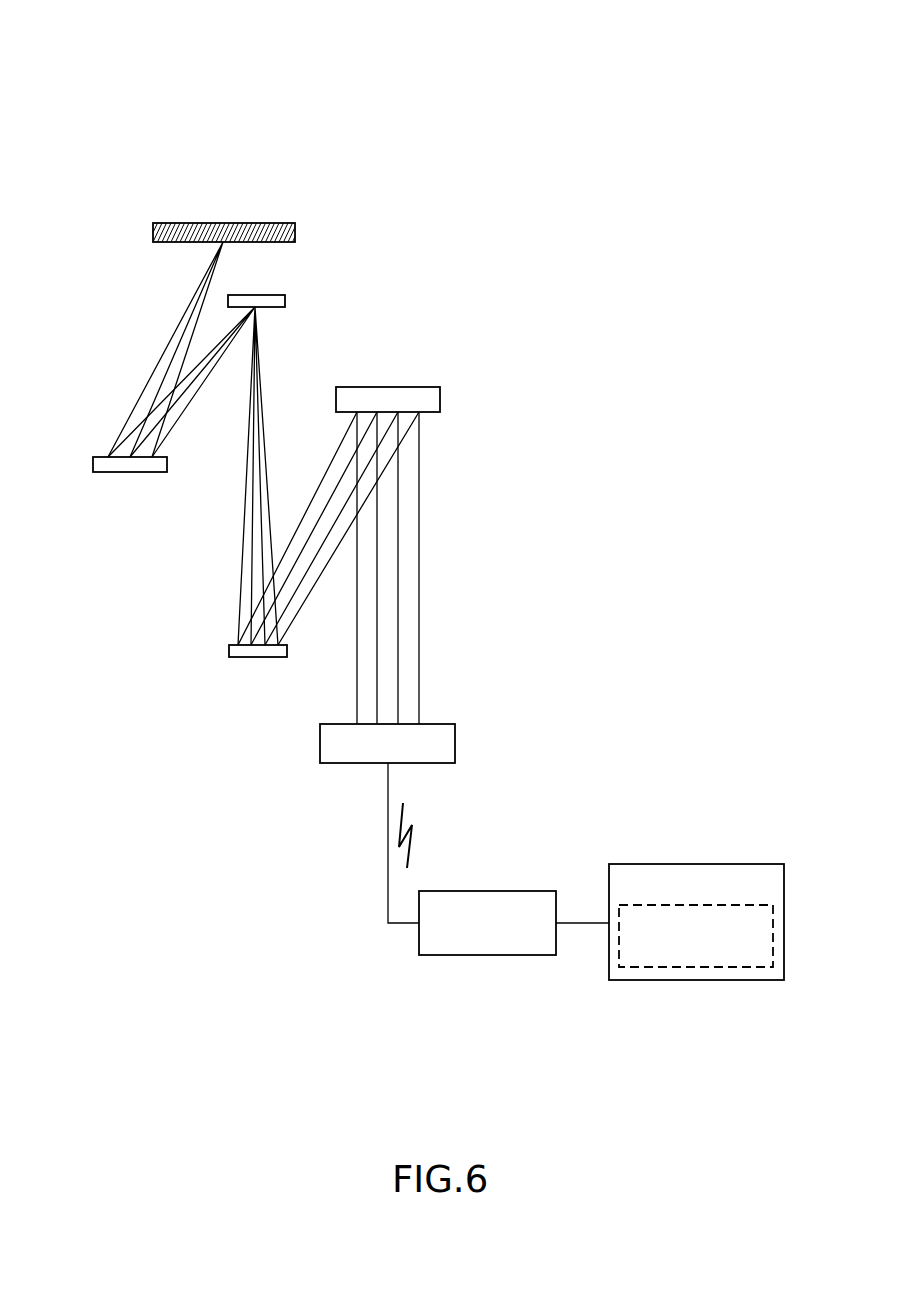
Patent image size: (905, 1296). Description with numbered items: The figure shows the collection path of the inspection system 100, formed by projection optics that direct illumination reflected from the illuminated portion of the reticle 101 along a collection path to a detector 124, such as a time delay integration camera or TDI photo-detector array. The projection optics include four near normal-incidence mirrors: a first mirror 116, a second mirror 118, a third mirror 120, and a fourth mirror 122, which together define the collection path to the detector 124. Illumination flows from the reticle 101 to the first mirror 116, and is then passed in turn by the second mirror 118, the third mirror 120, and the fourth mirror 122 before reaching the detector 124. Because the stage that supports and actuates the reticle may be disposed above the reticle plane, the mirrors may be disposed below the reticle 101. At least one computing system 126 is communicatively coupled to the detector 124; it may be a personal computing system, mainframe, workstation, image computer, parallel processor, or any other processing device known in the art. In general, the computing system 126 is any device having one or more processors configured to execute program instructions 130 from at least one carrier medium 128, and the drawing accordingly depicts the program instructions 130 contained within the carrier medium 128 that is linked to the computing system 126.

The inspection system 100 is at (149, 64).
The reticle 101 is at (296, 226).
The first mirror 116 is at (93, 458).
The second mirror 118 is at (285, 300).
The third mirror 120 is at (230, 645).
The fourth mirror 122 is at (440, 396).
The detector 124 is at (455, 736).
The computing system 126 is at (487, 890).
The carrier medium 128 is at (784, 877).
The program instructions 130 is at (773, 930).